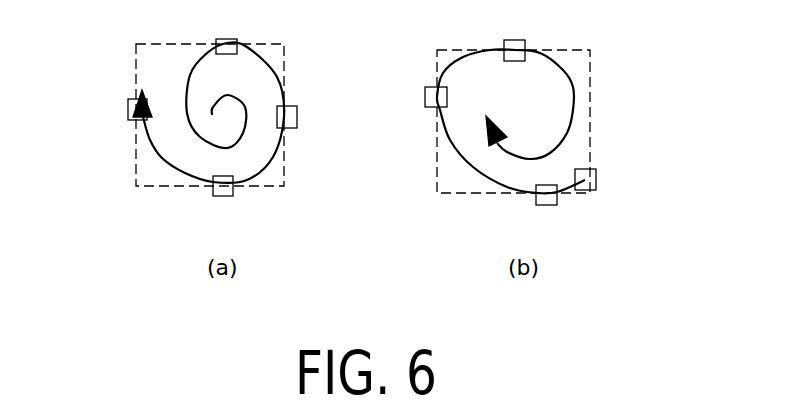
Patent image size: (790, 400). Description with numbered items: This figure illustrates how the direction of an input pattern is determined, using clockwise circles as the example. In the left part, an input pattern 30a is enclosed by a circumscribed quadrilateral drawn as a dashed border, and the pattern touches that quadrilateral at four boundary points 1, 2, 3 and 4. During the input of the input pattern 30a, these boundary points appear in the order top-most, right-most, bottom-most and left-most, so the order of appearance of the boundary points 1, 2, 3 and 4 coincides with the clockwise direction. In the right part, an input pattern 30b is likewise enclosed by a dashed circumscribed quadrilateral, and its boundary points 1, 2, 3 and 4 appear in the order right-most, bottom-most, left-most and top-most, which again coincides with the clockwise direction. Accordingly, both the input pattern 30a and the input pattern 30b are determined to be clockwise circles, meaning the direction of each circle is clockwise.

The boundary point 1 is at (417, 98).
The boundary point 2 is at (417, 173).
The boundary point 3 is at (330, 154).
The boundary point 4 is at (313, 70).
The input pattern 30a is at (185, 77).
The input pattern 30b is at (573, 85).